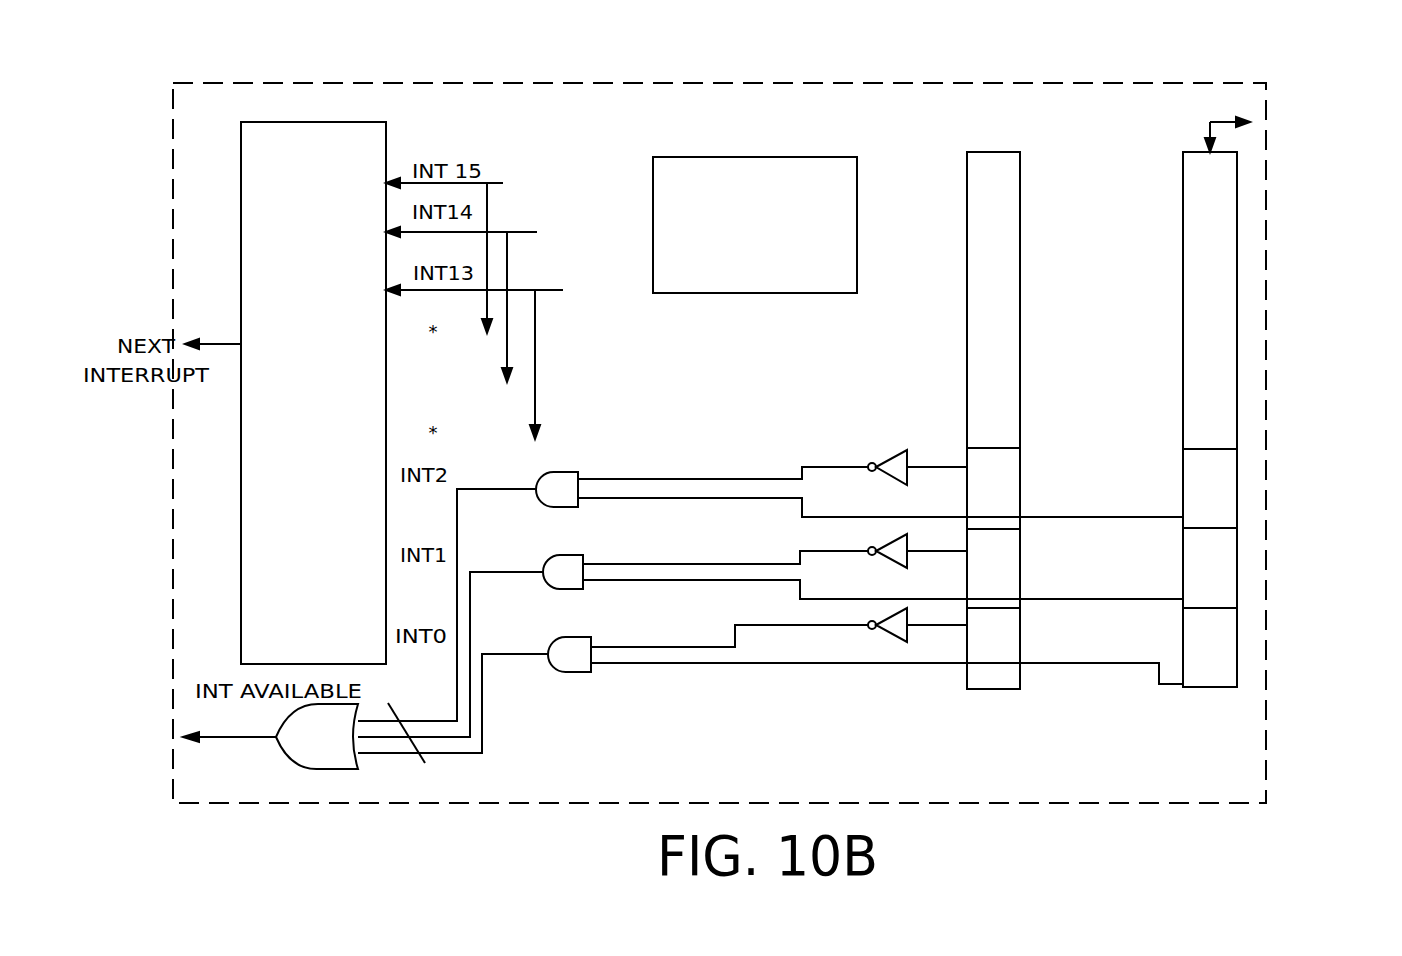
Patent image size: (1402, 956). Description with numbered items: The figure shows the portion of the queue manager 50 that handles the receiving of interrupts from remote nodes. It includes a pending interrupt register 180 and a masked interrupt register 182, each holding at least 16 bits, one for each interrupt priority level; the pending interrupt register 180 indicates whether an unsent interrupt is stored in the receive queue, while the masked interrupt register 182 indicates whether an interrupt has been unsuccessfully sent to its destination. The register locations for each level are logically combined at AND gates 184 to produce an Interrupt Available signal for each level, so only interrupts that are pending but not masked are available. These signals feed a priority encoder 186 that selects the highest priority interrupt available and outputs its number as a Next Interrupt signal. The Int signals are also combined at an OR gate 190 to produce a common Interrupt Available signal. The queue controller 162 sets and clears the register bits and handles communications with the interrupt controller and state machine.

The queue manager 50 is at (719, 419).
The priority encoder 186 is at (315, 122).
The queue controller 162 is at (755, 225).
The AND gates 184 is at (538, 470).
The masked interrupt register 182 is at (967, 422).
The pending interrupt register 180 is at (1237, 420).
The OR gate 190 is at (284, 748).
The 16-bit interrupt bus 16 is at (420, 747).